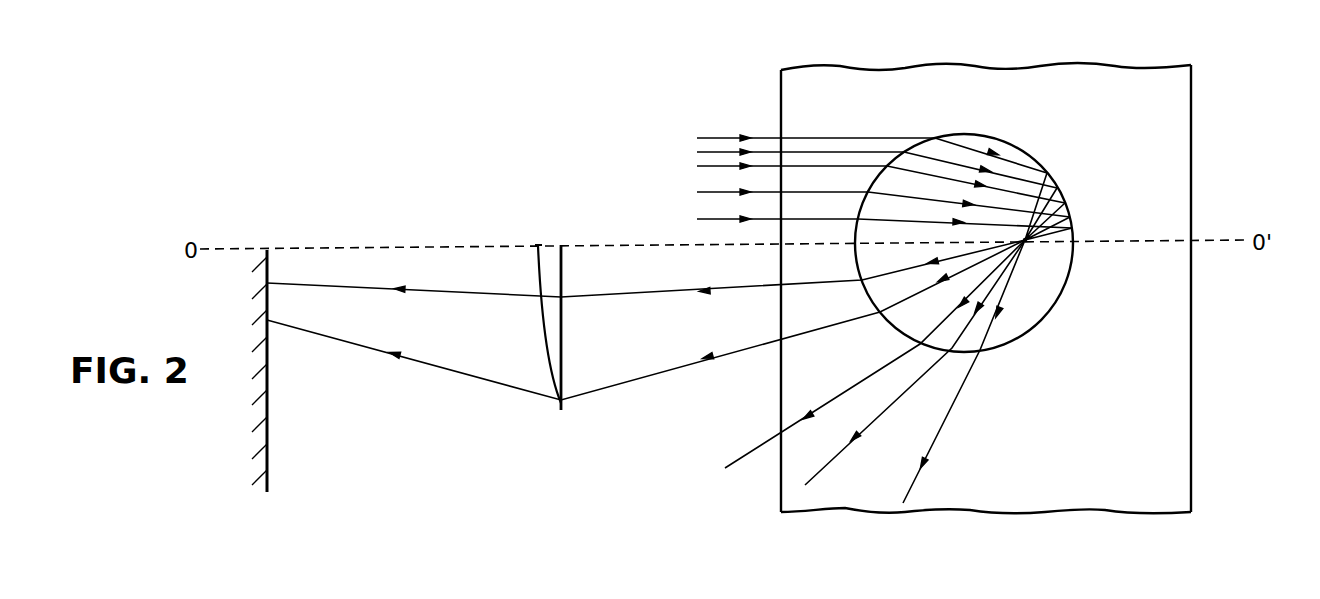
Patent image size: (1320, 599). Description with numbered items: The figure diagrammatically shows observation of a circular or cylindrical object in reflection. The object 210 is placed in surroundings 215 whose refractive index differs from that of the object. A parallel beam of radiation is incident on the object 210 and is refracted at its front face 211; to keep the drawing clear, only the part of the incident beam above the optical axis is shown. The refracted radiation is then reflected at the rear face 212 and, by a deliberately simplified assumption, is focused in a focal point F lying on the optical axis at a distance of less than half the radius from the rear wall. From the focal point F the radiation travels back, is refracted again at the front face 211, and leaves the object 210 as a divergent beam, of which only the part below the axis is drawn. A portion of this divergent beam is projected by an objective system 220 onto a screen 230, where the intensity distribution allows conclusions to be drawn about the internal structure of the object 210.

The object 210 is at (967, 152).
The front face 211 is at (870, 183).
The rear face 212 is at (1053, 185).
The surroundings 215 is at (1183, 429).
The objective system 220 is at (552, 254).
The screen 230 is at (270, 270).
The focal point F is at (1027, 243).